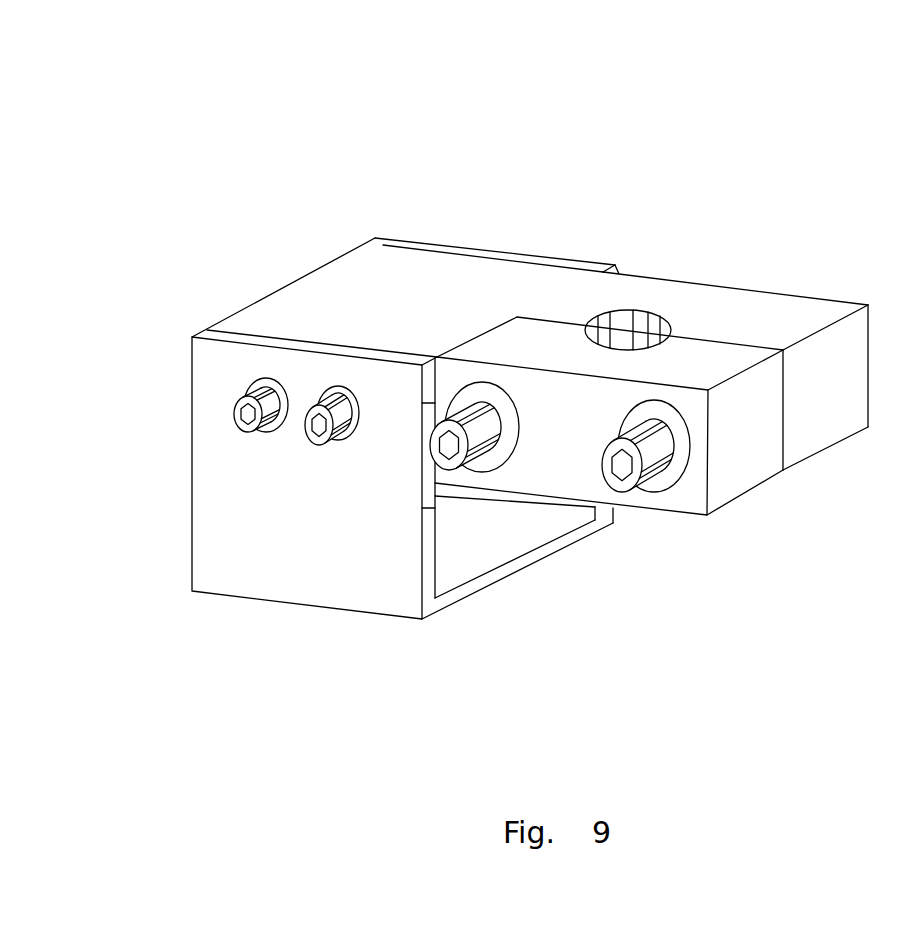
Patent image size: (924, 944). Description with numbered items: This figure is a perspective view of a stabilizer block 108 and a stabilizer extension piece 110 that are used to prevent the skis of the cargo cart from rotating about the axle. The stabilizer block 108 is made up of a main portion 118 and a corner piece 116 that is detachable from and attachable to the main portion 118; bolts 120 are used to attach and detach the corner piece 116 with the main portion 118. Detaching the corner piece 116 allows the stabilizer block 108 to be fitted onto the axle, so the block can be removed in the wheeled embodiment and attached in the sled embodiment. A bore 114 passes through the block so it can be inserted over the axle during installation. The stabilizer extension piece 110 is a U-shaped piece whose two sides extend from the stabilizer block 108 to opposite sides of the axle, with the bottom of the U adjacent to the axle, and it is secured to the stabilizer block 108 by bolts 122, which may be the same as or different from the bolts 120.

The stabilizer block 108 is at (603, 160).
The stabilizer extension piece 110 is at (222, 577).
The bore 114 is at (628, 328).
The corner piece 116 is at (717, 488).
The main portion 118 is at (810, 306).
The bolts 120 is at (655, 478).
The bolts 122 is at (316, 441).